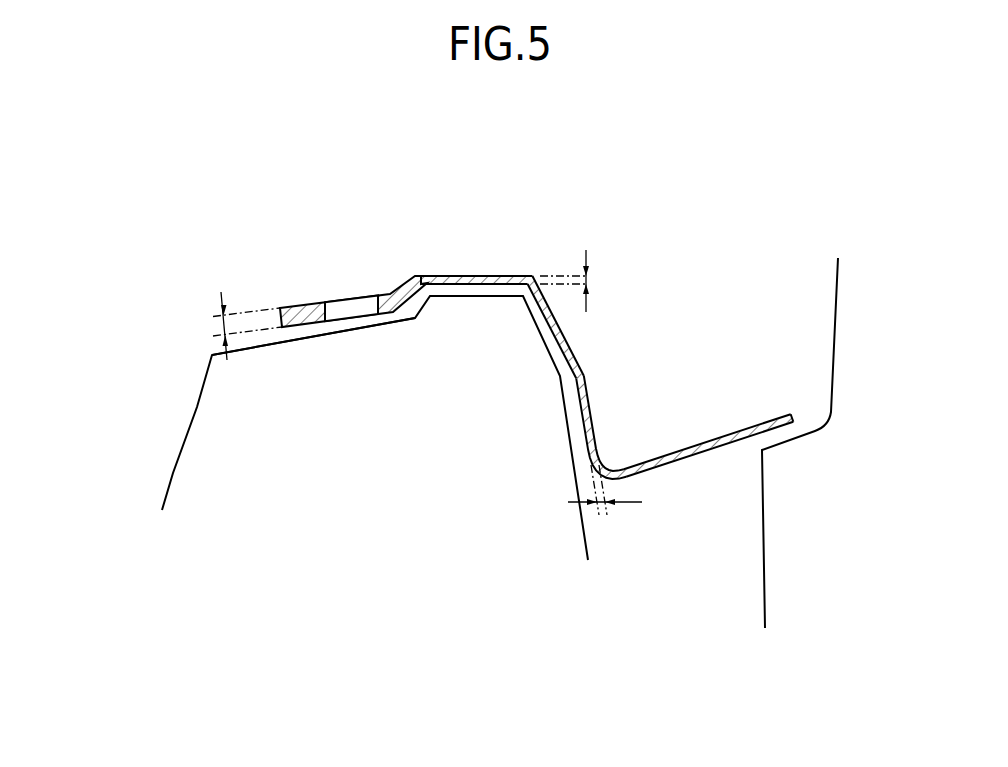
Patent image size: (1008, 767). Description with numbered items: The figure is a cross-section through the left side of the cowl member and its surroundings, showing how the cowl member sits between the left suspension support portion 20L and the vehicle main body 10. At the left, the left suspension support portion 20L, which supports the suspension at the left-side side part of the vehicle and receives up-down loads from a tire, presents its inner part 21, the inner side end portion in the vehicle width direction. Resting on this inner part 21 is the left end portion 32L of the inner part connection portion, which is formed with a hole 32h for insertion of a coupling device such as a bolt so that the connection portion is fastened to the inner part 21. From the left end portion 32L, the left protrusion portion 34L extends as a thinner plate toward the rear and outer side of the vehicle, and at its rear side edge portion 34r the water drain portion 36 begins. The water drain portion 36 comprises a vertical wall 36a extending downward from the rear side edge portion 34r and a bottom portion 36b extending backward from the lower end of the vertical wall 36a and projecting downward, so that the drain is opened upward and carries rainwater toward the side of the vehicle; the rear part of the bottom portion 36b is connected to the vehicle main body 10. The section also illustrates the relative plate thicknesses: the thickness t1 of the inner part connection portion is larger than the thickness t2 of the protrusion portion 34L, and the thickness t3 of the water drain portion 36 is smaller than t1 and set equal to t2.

The vehicle main body 10 is at (772, 493).
The left suspension support portion 20L is at (193, 412).
The inner part 21 is at (285, 340).
The left end portion 32L is at (303, 306).
The hole 32h is at (348, 307).
The left protrusion portion 34L is at (468, 276).
The rear side edge portion 34r is at (533, 277).
The water drain portion 36 is at (684, 375).
The vertical wall 36a is at (584, 364).
The bottom portion 36b is at (703, 447).
The thickness of the inner part connection portion t1 is at (233, 326).
The thickness of the protrusion portions t2 is at (584, 281).
The thickness of the water drain portion t3 is at (605, 506).